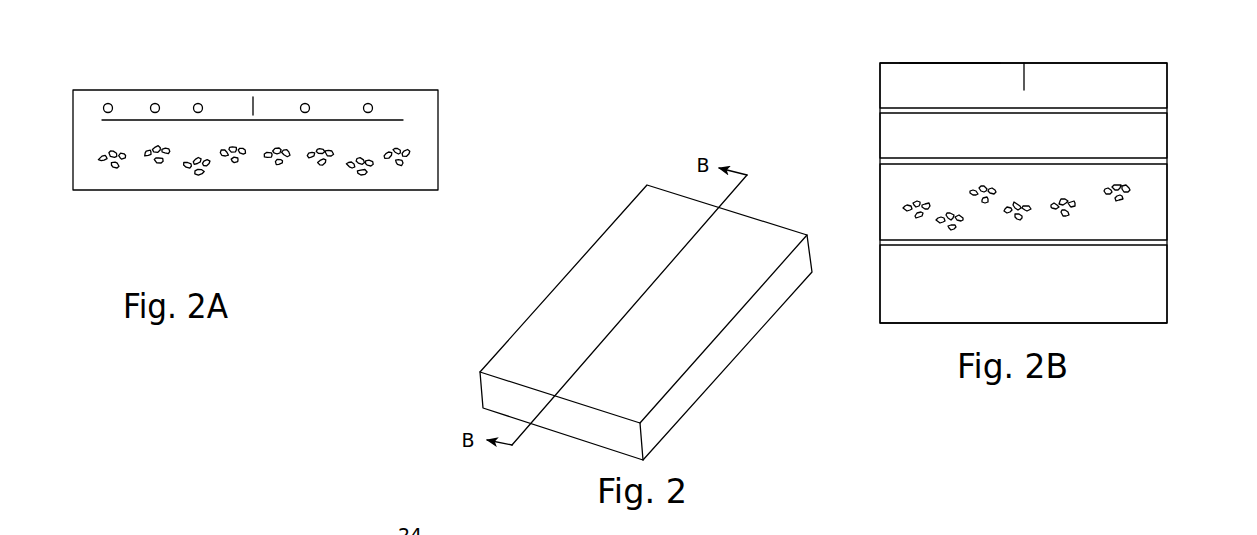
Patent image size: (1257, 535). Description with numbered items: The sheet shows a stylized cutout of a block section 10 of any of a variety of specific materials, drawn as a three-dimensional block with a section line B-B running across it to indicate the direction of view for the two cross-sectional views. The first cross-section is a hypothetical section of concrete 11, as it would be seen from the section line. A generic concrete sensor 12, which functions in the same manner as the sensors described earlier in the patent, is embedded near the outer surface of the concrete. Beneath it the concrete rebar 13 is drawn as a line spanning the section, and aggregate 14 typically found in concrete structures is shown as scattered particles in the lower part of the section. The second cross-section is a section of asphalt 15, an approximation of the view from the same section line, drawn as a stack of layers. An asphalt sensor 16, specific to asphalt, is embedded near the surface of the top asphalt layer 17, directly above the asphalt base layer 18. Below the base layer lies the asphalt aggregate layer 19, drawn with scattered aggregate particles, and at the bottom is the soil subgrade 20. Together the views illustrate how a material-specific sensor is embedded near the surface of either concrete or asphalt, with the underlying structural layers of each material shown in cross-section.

In FIG. 2, the block section 10 is at (574, 237).
In FIG. 2A, the section of concrete 11 is at (82, 84).
In FIG. 2A, the concrete sensor 12 is at (262, 107).
In FIG. 2A, the concrete rebar 13 is at (103, 112).
In FIG. 2A, the aggregate 14 is at (336, 173).
In FIG. 2B, the section of asphalt 15 is at (1020, 176).
In FIG. 2B, the asphalt sensor 16 is at (1024, 63).
In FIG. 2B, the asphalt layer 17 is at (1152, 96).
In FIG. 2B, the asphalt base layer 18 is at (1150, 141).
In FIG. 2B, the asphalt aggregate layer 19 is at (1150, 213).
In FIG. 2B, the soil subgrade 20 is at (1150, 284).